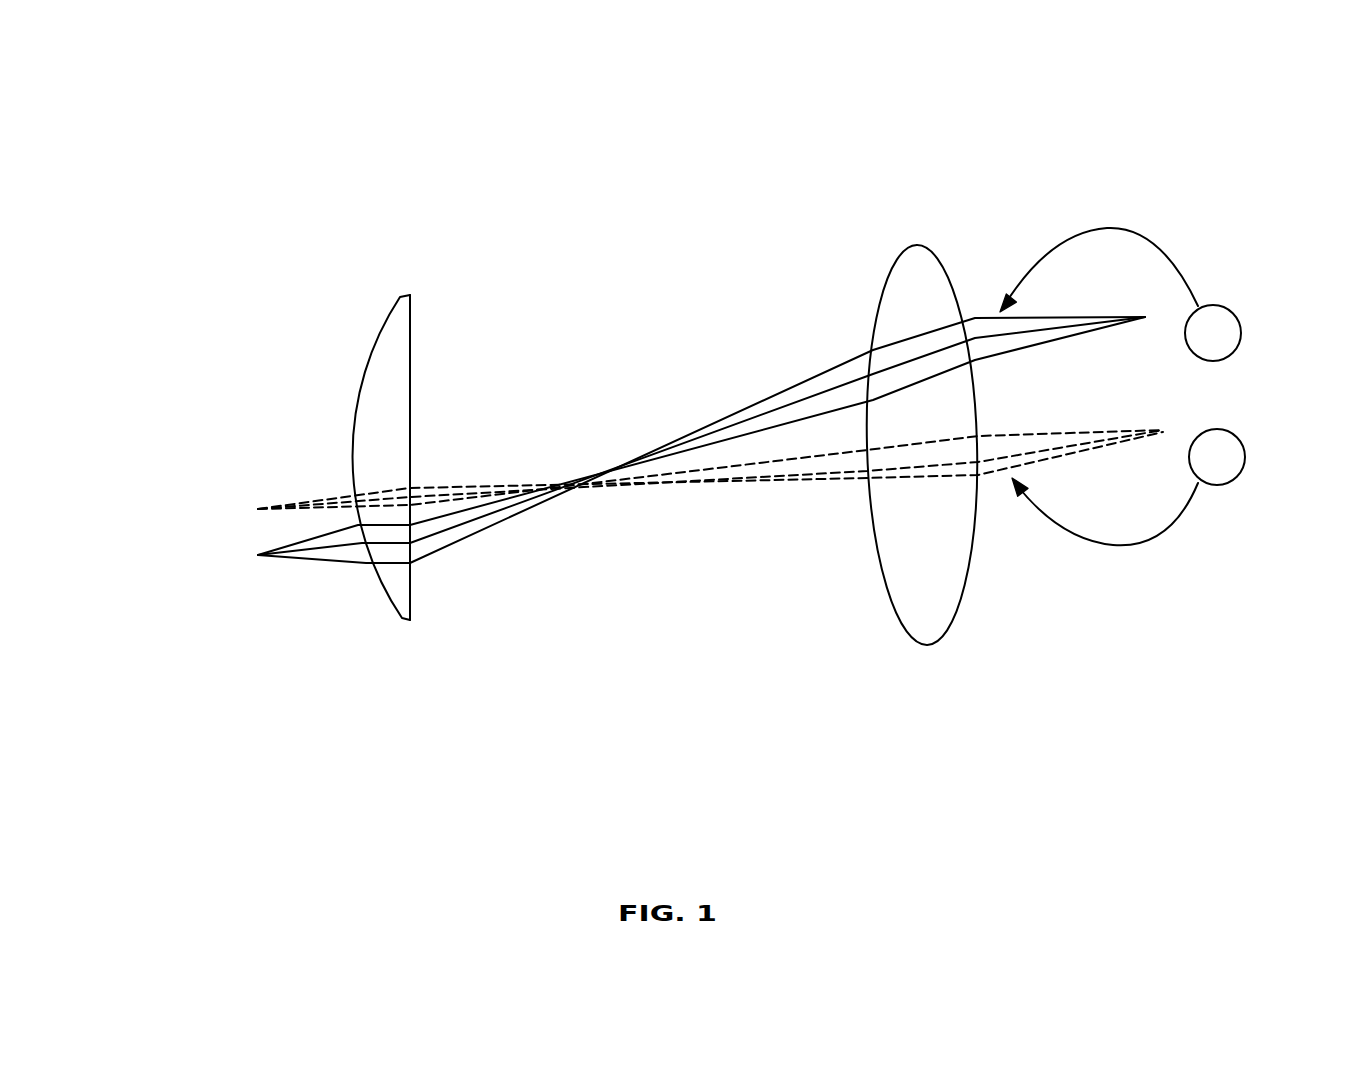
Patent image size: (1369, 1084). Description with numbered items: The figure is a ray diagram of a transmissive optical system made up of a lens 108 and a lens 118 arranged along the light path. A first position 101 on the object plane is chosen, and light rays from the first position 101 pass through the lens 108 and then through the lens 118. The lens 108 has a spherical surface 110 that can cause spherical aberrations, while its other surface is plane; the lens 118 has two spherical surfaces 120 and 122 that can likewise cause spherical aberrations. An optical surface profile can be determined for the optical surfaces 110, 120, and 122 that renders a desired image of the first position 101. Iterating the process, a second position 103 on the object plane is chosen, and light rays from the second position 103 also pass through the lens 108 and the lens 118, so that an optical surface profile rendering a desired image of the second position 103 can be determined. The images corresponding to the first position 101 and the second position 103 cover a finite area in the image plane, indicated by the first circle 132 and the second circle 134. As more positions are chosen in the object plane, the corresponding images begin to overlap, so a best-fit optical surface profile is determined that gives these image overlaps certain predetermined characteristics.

The first position 101 is at (237, 509).
The second position 103 is at (238, 559).
The lens 108 is at (337, 540).
The spherical surface 110 is at (381, 314).
The lens 118 is at (878, 538).
The spherical surface 120 is at (888, 284).
The spherical surface 122 is at (944, 246).
The first circle 132 is at (1222, 304).
The second circle 134 is at (1223, 484).